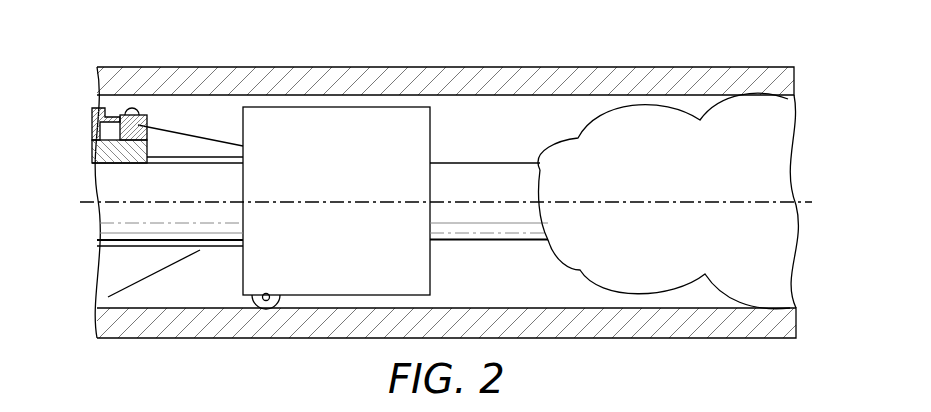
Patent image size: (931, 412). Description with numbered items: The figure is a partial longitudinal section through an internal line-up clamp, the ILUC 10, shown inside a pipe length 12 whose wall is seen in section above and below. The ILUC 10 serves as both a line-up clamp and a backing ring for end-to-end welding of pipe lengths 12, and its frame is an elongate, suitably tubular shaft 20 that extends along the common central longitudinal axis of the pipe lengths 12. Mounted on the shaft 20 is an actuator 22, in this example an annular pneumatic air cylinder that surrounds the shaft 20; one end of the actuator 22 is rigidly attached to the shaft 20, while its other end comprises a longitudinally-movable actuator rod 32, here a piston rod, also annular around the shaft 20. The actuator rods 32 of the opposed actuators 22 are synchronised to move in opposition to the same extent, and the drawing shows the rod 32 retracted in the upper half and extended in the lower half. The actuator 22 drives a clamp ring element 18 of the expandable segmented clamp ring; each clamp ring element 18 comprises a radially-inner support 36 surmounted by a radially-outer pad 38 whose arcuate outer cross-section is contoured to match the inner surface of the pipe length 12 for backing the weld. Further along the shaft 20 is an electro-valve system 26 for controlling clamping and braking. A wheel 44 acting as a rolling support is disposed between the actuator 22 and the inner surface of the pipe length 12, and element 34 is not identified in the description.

The ILUC 10 is at (84, 97).
The pipe length 12 is at (723, 73).
The clamp ring element 18 is at (144, 106).
The shaft 20 is at (485, 171).
The actuator 22 is at (337, 115).
The electro-valve system 26 is at (645, 287).
The actuator rod 32 is at (225, 157).
The wire line 34 is at (193, 136).
The radially-inner support 36 is at (136, 159).
The radially-outer pad 38 is at (129, 121).
The wheel 44 is at (268, 309).